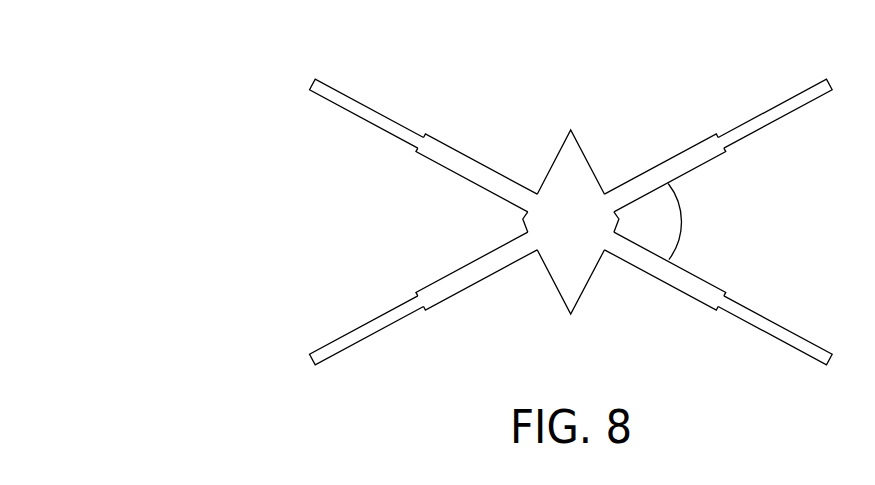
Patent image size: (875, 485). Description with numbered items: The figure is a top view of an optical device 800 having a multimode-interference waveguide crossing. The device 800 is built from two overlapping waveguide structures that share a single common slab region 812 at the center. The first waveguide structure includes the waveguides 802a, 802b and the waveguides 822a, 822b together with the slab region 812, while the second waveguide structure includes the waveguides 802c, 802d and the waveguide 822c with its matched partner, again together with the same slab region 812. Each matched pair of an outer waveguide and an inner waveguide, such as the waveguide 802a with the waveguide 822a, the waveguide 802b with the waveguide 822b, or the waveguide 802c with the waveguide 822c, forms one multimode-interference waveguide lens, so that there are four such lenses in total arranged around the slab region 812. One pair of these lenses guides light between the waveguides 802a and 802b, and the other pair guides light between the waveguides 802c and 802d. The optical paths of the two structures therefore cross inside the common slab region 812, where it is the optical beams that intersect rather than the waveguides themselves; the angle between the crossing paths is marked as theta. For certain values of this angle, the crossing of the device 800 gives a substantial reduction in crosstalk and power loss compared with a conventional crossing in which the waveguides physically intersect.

The optical device 800 is at (183, 304).
The waveguide 802a is at (780, 90).
The waveguide 802b is at (377, 308).
The waveguide 802c is at (753, 337).
The waveguide 802d is at (385, 108).
The slab region 812 is at (571, 160).
The waveguide 822a is at (691, 135).
The waveguide 822b is at (467, 252).
The waveguide 822c is at (668, 297).